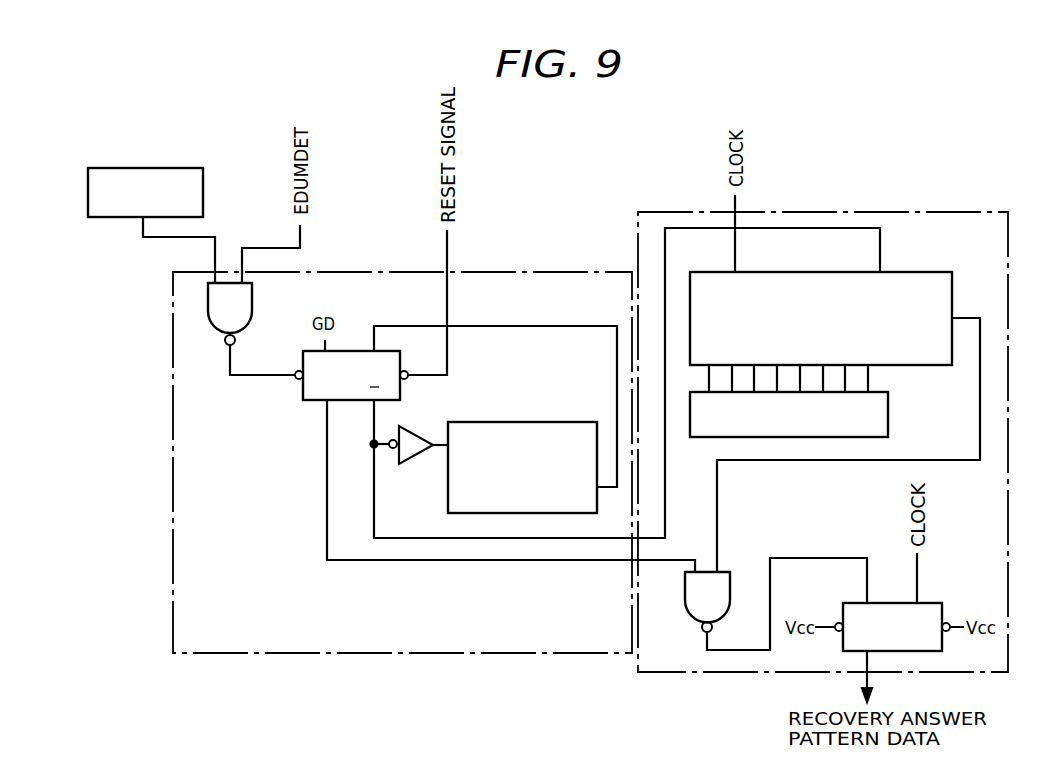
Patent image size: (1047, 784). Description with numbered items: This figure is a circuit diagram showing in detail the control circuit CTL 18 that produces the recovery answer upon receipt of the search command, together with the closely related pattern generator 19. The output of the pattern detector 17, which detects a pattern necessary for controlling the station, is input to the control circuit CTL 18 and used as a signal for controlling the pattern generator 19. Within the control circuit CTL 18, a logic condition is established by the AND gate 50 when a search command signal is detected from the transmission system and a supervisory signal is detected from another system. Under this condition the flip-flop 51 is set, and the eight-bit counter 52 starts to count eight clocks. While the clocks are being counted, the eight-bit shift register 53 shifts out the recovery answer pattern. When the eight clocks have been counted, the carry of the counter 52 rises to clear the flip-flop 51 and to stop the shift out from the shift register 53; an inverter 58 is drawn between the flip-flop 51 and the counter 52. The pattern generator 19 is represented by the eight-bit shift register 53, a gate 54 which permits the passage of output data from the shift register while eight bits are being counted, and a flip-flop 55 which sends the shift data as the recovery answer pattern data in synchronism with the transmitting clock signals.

The pattern detector 17 is at (164, 168).
The control circuit CTL 18 is at (498, 272).
The pattern generator 19 is at (918, 212).
The AND gate 50 is at (252, 305).
The flip-flop 51 is at (352, 349).
The 8-bit counter 52 is at (498, 422).
The 8-bit shift register 53 is at (775, 272).
The gate 54 is at (730, 585).
The flip-flop 55 is at (928, 603).
The inverter 58 is at (415, 427).